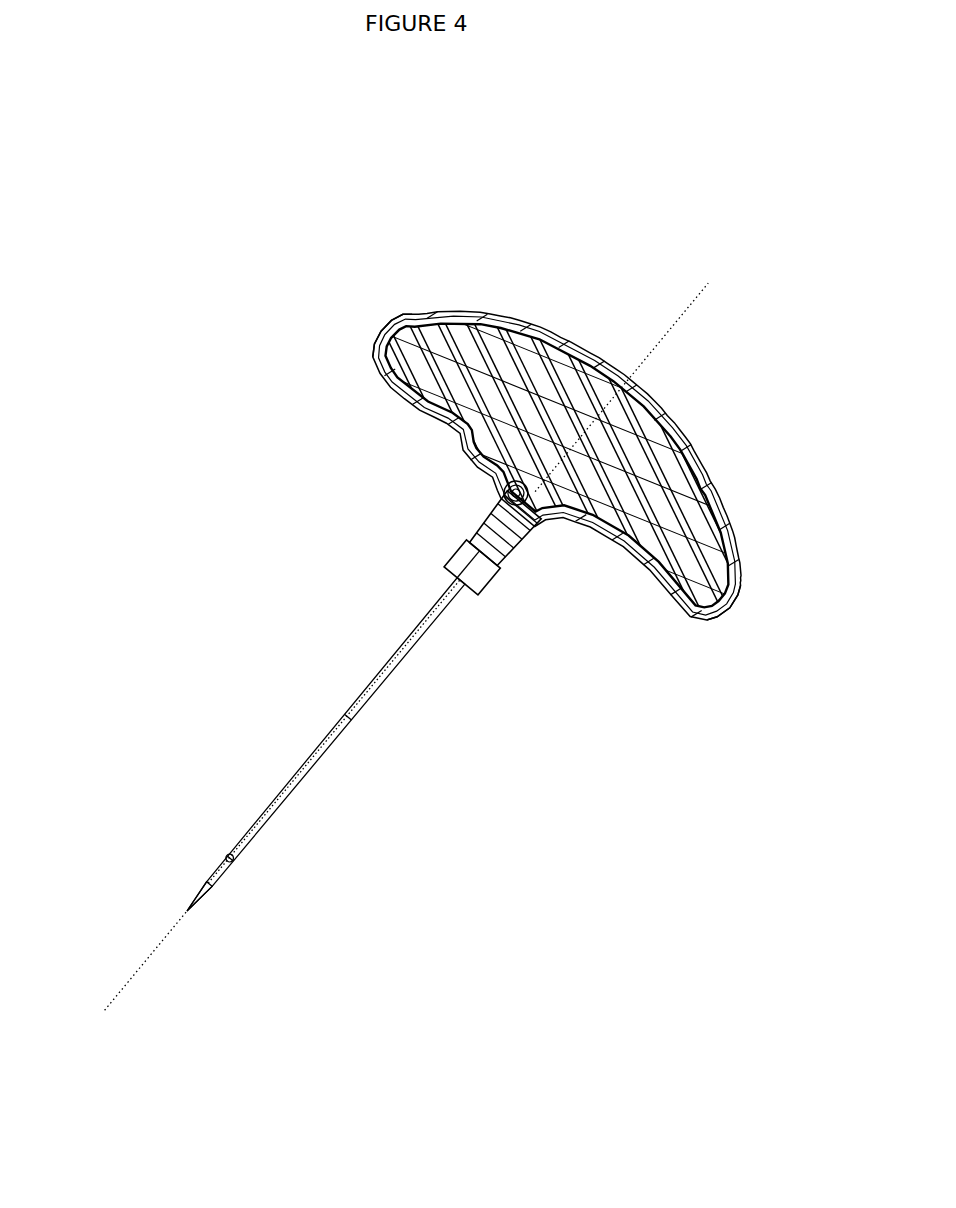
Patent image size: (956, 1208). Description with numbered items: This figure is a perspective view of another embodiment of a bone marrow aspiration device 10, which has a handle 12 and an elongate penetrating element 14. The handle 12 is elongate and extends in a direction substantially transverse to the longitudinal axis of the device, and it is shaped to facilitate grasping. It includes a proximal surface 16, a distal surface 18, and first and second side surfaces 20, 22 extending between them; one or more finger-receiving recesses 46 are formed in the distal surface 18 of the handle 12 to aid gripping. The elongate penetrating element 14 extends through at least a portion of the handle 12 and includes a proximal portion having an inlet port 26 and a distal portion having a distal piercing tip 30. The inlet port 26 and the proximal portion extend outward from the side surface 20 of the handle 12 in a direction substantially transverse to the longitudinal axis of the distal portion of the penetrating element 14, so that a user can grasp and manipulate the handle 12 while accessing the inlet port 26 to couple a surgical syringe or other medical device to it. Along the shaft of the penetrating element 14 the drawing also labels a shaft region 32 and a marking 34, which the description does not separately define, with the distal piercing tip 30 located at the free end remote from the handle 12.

The bone marrow aspiration device 10 is at (147, 282).
The handle 12 is at (527, 372).
The elongate penetrating element 14 is at (260, 742).
The proximal surface 16 is at (575, 446).
The distal surface 18 is at (574, 446).
The first side surface 20 is at (388, 332).
The second side surface 22 is at (726, 604).
The inlet port 26 is at (484, 495).
The distal piercing tip 30 is at (190, 912).
The cannula shaft 32 is at (305, 766).
The depth marking 34 is at (230, 858).
The finger-receiving recesses 46 is at (543, 493).